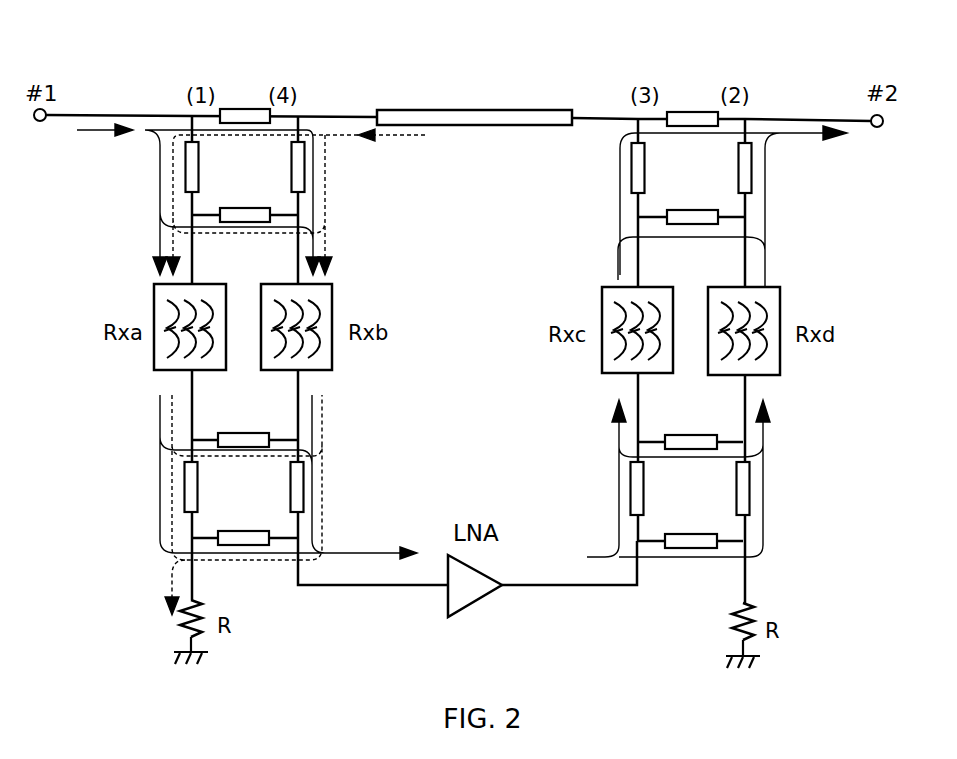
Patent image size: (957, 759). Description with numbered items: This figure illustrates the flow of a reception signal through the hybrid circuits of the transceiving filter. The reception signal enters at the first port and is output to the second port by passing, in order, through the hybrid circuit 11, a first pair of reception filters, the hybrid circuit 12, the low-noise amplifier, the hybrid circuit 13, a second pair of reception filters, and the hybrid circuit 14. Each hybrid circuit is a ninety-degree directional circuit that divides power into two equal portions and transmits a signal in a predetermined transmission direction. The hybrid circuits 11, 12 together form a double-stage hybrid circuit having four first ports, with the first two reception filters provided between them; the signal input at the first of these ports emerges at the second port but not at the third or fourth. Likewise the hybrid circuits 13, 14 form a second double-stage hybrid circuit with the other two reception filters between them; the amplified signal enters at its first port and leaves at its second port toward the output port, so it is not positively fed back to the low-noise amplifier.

The hybrid circuit 11 is at (330, 100).
The hybrid circuit 12 is at (331, 432).
The hybrid circuit 13 is at (771, 435).
The hybrid circuit 14 is at (776, 105).